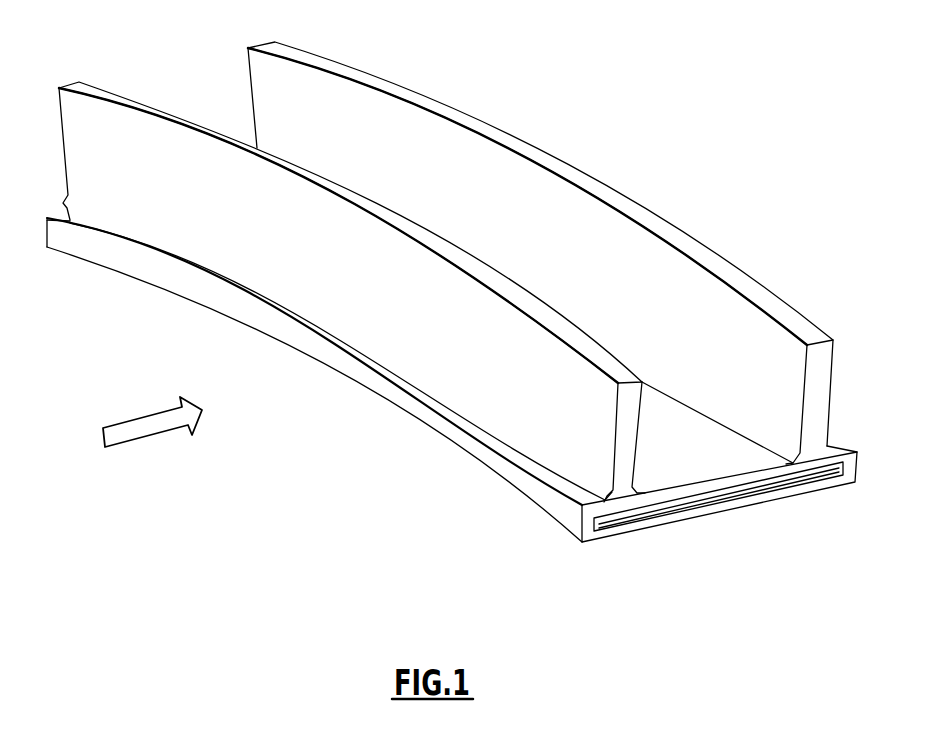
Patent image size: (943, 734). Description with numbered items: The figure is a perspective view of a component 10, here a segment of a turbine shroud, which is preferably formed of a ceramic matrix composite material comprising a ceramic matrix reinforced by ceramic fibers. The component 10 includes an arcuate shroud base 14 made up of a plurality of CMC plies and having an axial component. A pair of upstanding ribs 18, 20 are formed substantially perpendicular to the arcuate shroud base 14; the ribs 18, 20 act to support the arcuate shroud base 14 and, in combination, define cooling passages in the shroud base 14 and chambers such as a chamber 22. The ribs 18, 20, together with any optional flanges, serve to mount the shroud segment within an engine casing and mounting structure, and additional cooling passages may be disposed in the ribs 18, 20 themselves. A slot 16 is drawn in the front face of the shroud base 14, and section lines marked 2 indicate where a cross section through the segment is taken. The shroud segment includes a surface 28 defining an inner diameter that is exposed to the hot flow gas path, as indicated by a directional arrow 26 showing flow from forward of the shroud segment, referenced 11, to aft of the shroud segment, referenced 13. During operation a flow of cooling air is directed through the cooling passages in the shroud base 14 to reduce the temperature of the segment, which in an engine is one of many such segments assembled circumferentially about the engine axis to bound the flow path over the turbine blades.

The component 10 is at (600, 90).
The forward of the shroud segment 11 is at (14, 475).
The aft of the shroud segment 13 is at (788, 186).
The arcuate shroud base 14 is at (492, 474).
The slot in base 16 is at (748, 462).
The upstanding rib 18 is at (776, 314).
The upstanding rib 20 is at (487, 398).
The chamber 22 is at (633, 350).
The directional arrow 26 is at (150, 441).
The surface 28 is at (338, 404).
The section line 2- 2 is at (618, 385).